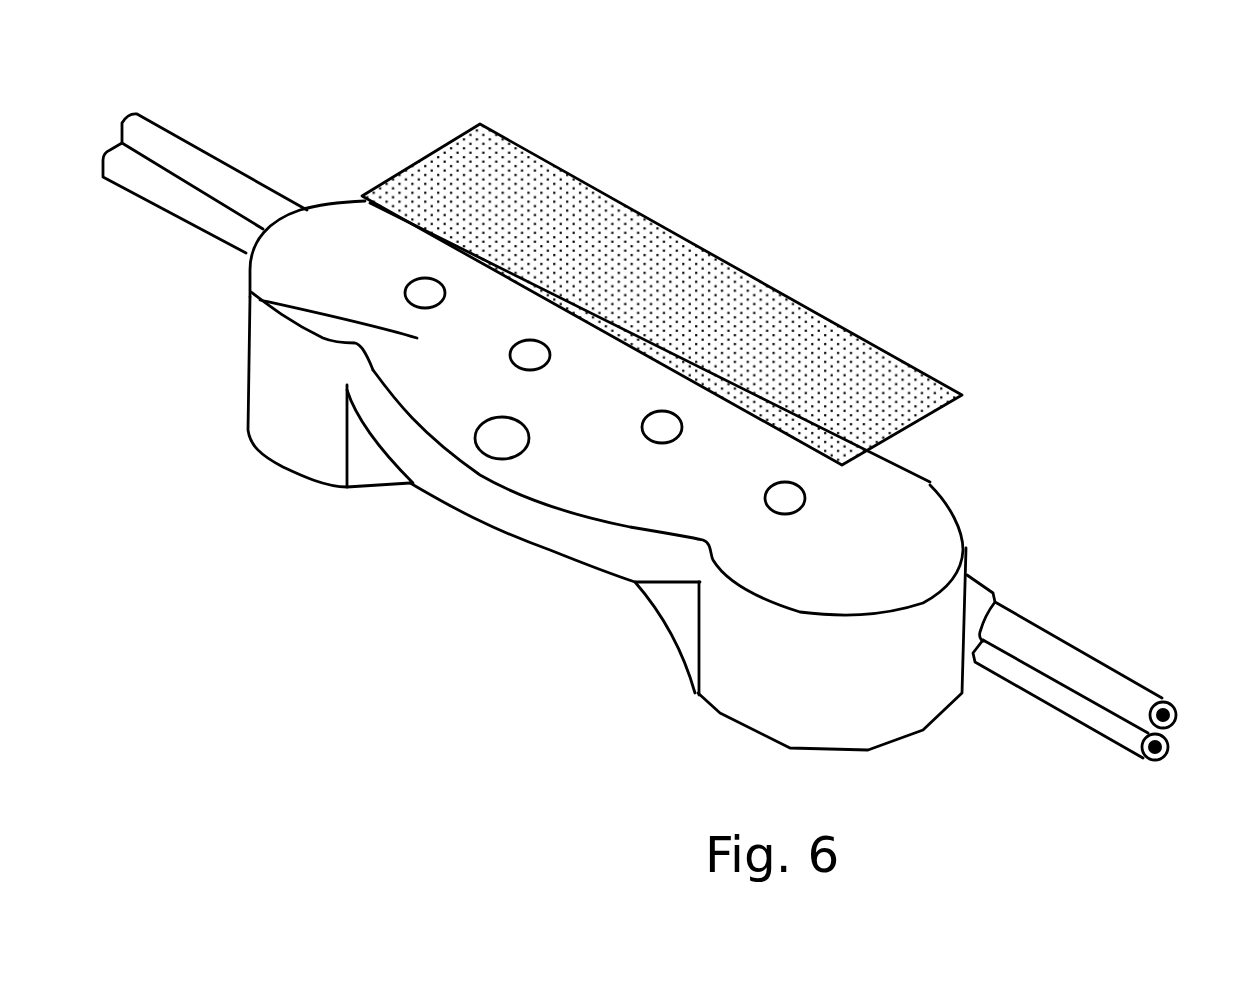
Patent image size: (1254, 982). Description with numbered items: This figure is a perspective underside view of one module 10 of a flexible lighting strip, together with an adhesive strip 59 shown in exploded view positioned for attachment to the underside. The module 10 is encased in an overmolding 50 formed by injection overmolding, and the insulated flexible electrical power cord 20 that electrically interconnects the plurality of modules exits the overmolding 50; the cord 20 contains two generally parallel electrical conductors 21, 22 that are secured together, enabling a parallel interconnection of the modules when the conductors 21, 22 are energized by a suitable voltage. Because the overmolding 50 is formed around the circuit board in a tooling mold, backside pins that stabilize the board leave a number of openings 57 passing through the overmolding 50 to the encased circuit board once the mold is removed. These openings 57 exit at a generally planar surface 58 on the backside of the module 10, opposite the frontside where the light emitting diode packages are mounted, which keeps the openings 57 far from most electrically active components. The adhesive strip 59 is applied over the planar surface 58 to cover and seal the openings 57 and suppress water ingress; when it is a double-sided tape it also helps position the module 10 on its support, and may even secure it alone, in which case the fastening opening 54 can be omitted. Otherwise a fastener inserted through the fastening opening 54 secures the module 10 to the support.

The module 10 is at (432, 645).
The flexible electrical power cord 20 is at (1038, 635).
The electrical conductor 21 is at (1158, 758).
The electrical conductor 22 is at (1178, 713).
The overmolding 50 is at (308, 442).
The fastening opening 54 is at (499, 436).
The openings 57 is at (423, 292).
The generally planar surface 58 is at (262, 300).
The adhesive strip 59 is at (840, 370).